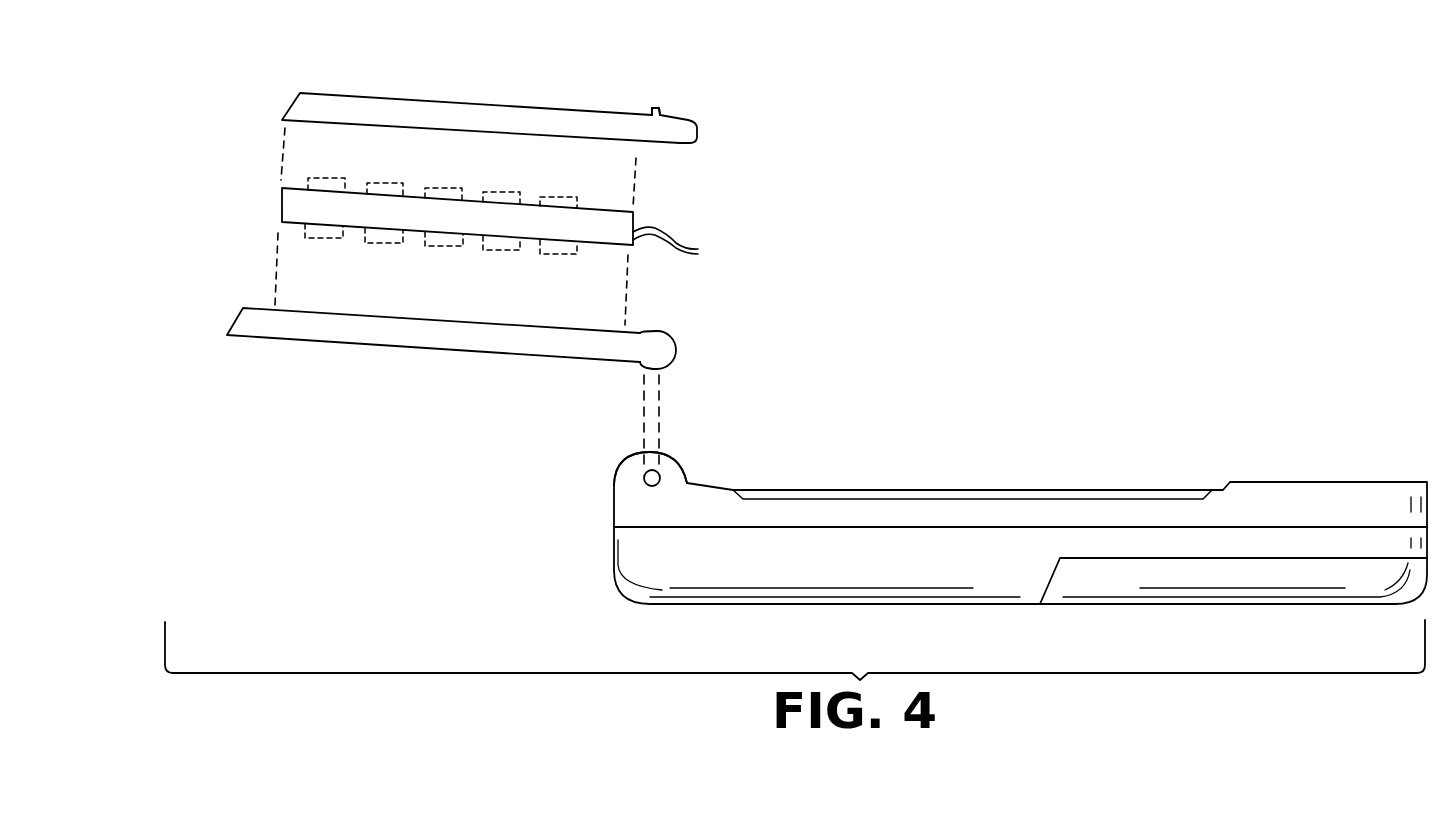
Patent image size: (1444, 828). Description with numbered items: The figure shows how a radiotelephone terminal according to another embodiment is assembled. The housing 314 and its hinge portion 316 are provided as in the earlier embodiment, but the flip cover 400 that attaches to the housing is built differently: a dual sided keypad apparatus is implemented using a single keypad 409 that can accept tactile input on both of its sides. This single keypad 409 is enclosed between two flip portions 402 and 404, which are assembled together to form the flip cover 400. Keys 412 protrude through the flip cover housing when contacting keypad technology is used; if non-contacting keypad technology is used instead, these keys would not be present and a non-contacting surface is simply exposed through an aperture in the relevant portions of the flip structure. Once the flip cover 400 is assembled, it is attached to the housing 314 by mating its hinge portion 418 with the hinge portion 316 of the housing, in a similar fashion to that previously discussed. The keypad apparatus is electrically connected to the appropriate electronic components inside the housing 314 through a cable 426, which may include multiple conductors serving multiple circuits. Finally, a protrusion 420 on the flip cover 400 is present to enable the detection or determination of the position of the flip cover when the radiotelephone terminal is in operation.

The housing 314 is at (1200, 605).
The hinge portion 316 is at (683, 467).
The flip cover 400 is at (277, 93).
The flip portion 402 is at (490, 103).
The flip portion 404 is at (488, 352).
The single keypad 409 is at (638, 216).
The keys 412 is at (343, 178).
The hinge portion 418 is at (676, 356).
The protrusion 420 is at (656, 107).
The cable 426 is at (700, 252).